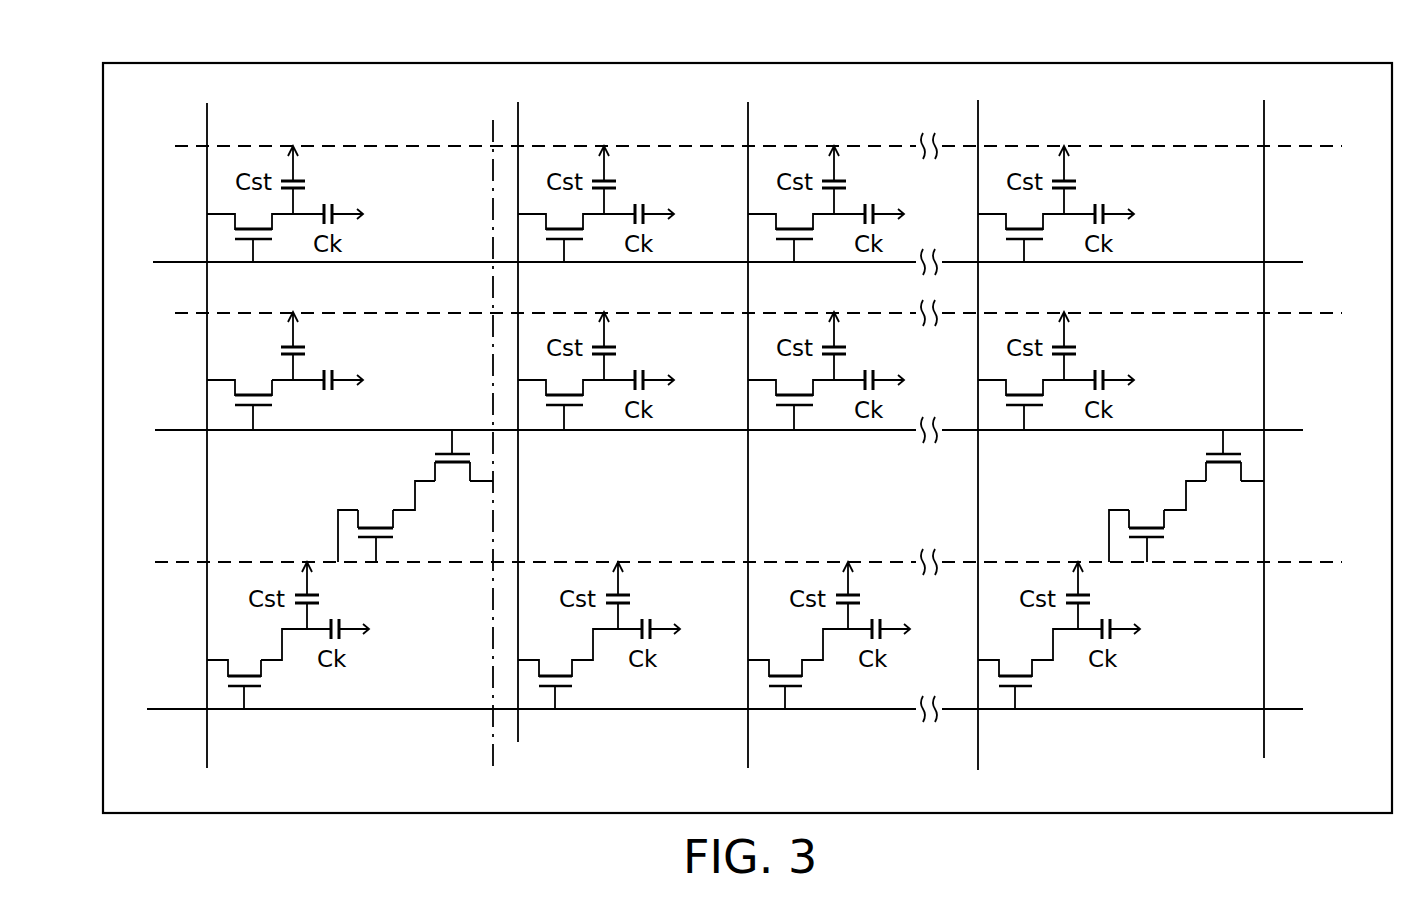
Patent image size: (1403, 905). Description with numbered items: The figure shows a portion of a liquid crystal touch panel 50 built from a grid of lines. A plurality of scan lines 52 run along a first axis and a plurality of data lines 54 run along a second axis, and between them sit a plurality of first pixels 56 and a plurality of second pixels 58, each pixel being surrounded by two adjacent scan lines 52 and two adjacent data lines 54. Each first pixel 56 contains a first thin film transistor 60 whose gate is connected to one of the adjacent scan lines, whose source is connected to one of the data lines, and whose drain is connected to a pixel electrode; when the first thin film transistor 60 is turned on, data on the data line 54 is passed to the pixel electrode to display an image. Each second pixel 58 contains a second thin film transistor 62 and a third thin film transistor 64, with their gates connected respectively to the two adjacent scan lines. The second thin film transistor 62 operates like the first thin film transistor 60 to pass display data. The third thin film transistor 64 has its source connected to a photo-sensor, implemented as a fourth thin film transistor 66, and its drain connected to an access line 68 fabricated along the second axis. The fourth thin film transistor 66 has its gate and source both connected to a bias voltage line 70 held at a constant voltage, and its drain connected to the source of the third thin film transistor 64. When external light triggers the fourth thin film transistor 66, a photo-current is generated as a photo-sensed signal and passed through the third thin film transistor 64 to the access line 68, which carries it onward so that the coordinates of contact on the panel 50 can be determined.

The panel 50 is at (162, 63).
The scan lines 52 is at (708, 485).
The data lines 54 is at (595, 421).
The first pixel 56 is at (289, 370).
The second pixel 58 is at (701, 496).
The first thin film transistor 60 is at (201, 403).
The second thin film transistor 62 is at (198, 681).
The third thin film transistor 64 is at (435, 463).
The fourth thin film transistor 66 is at (393, 518).
The access line 68 is at (880, 449).
The bias voltage line 70 is at (766, 356).